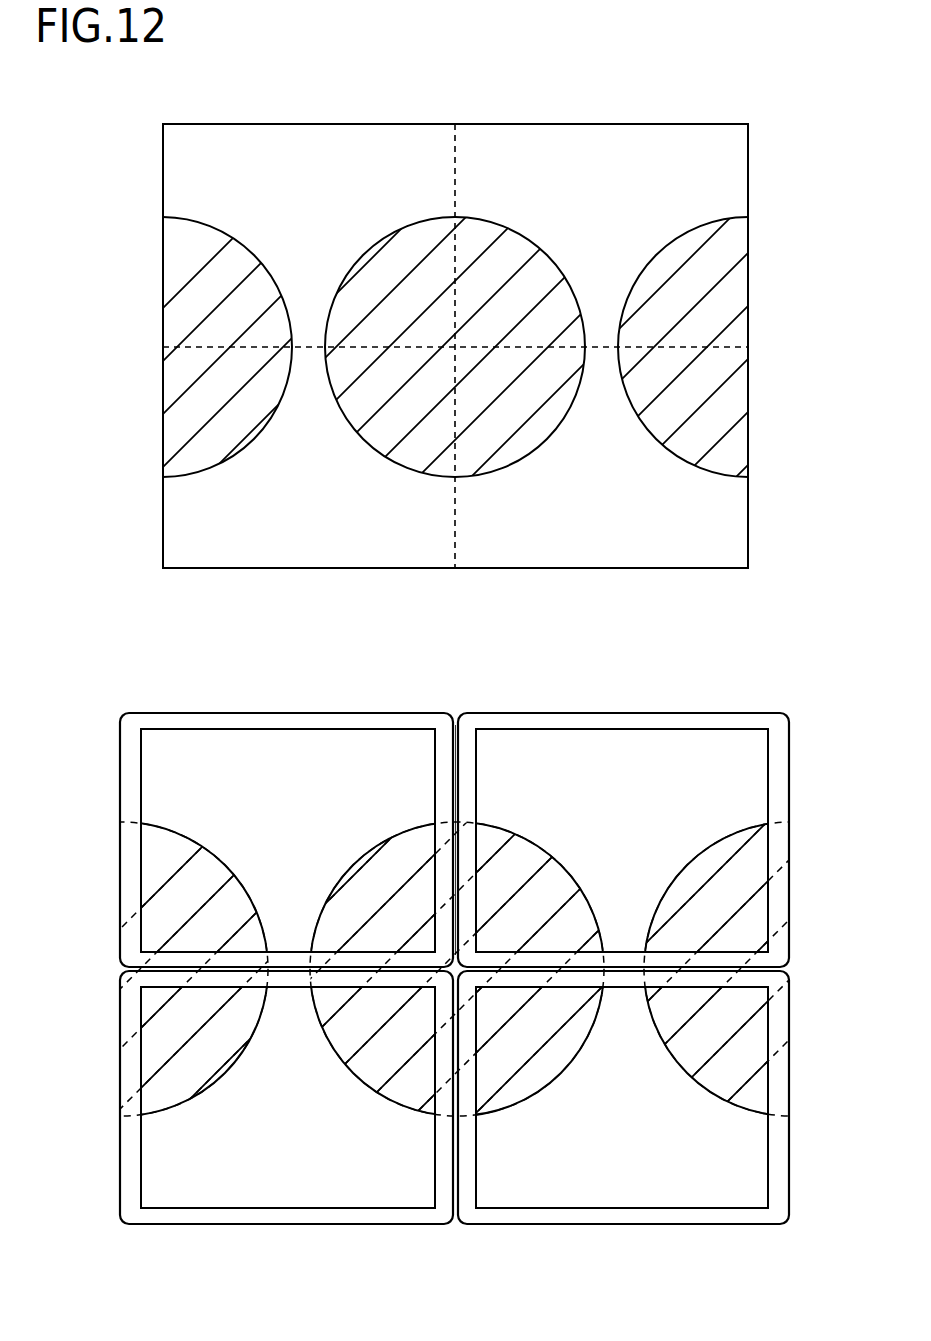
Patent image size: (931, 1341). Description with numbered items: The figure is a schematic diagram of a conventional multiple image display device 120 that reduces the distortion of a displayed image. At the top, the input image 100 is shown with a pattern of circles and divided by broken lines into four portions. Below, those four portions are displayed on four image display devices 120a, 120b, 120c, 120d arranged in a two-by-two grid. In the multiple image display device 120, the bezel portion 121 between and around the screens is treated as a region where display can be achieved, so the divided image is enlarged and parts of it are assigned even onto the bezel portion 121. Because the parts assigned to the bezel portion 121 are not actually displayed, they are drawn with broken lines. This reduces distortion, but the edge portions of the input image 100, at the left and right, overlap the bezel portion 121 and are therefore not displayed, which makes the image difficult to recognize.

The input image 100 is at (748, 568).
The multiple image display device 120 is at (465, 971).
The image display device 120a is at (273, 712).
The image display device 120b is at (668, 712).
The image display device 120c is at (292, 1226).
The image display device 120d is at (685, 1226).
The bezel portion 121 is at (465, 737).